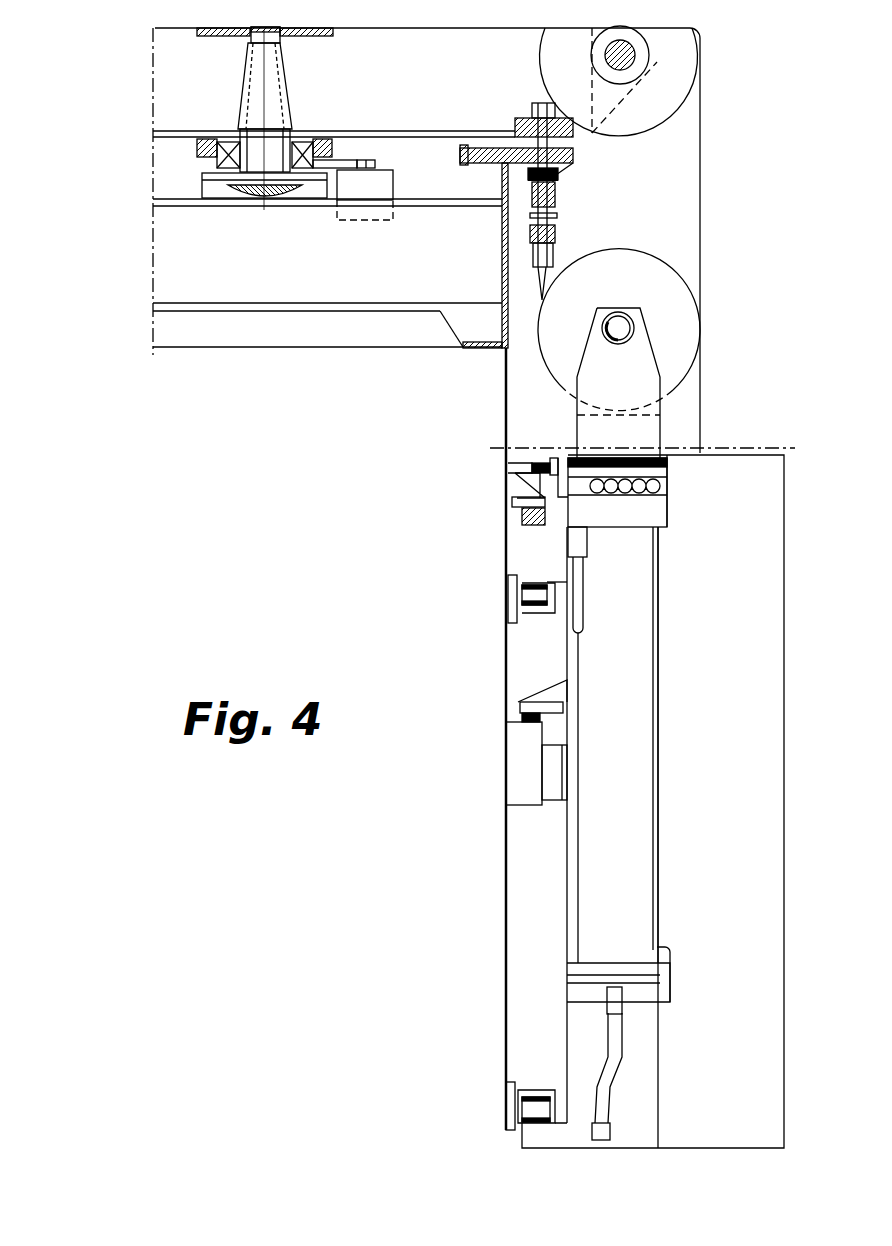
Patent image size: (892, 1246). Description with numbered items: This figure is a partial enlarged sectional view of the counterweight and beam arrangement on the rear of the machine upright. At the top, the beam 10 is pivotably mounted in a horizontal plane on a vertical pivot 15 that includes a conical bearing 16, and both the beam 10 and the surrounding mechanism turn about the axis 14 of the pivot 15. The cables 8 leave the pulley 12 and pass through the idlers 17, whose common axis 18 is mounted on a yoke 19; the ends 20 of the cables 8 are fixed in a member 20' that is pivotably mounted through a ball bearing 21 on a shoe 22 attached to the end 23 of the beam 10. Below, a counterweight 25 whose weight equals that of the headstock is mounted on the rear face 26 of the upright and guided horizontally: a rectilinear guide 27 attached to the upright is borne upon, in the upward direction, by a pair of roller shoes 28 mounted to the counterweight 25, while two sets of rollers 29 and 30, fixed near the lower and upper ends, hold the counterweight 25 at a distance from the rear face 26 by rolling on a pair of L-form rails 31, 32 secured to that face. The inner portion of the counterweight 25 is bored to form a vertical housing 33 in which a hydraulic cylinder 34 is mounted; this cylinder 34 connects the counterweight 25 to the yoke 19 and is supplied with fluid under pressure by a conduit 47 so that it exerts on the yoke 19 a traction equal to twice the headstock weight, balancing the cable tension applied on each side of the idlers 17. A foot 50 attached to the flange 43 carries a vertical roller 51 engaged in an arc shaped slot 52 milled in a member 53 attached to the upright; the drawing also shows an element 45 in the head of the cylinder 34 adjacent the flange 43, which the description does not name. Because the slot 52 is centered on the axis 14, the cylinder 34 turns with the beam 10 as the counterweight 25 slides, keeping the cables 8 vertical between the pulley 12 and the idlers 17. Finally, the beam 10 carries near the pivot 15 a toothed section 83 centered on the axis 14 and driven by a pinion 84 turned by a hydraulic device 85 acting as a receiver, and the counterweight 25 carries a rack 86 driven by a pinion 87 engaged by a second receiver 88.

The cables 8 is at (698, 132).
The beam 10 is at (426, 191).
The pulley 12 is at (680, 70).
The axis 14 is at (262, 205).
The vertical pivot 15 is at (238, 97).
The conical bearing 16 is at (218, 163).
The idlers 17 is at (683, 327).
The common axis 18 is at (618, 322).
The yoke 19 is at (650, 385).
The ends of the cables 20 is at (532, 208).
The member 20' is at (573, 213).
The ball bearing 21 is at (530, 127).
The shoe 22 is at (597, 133).
The end of the beam 23 is at (600, 136).
The counterweight 25 is at (642, 798).
The rear face 26 is at (508, 680).
The rectilinear guide 27 is at (512, 502).
The roller shoes 28 is at (523, 523).
The rollers 29 is at (530, 1110).
The rollers 30 is at (528, 595).
The rail 31 is at (535, 1093).
The rail 32 is at (528, 610).
The vertical housing 33 is at (653, 827).
The hydraulic cylinder 34 is at (640, 783).
The flange 43 is at (658, 515).
The spring 45 is at (670, 480).
The conduit 47 is at (580, 600).
The foot 50 is at (538, 478).
The vertical roller 51 is at (533, 463).
The arc shaped slot 52 is at (552, 458).
The member 53 is at (520, 468).
The toothed section 83 is at (337, 160).
The pinion 84 is at (365, 162).
The hydraulic device 85 is at (352, 188).
The rack 86 is at (522, 715).
The pinion 87 is at (537, 723).
The second receiver 88 is at (518, 757).